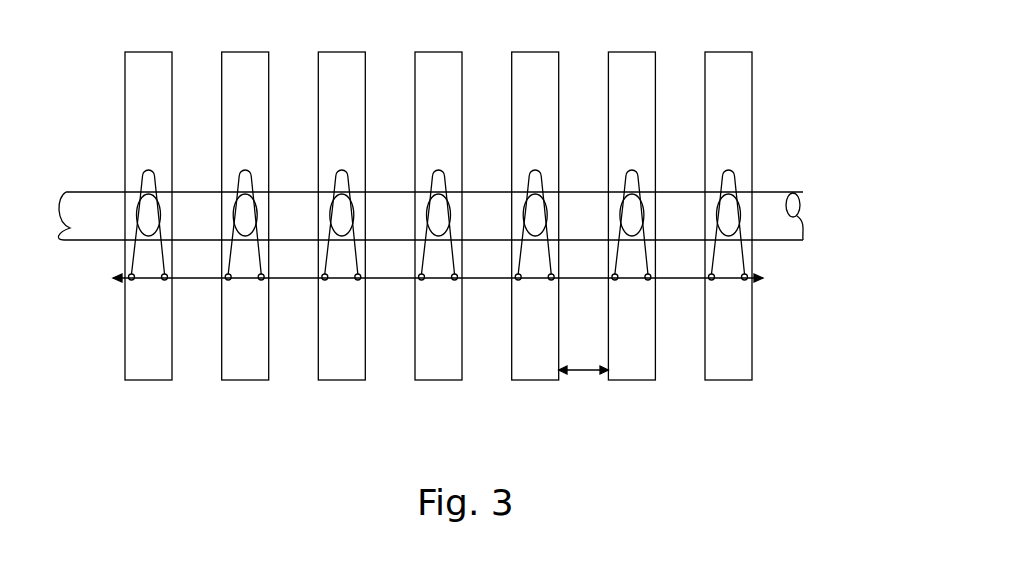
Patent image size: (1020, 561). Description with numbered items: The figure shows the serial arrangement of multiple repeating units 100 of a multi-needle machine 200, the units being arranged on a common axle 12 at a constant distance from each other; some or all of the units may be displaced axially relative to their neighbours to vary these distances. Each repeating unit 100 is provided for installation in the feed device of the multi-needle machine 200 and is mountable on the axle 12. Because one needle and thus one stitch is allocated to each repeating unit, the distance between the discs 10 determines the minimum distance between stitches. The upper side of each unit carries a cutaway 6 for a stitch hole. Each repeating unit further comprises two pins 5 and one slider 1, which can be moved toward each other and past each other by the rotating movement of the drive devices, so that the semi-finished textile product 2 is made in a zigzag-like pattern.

The multi-needle machine 200 is at (790, 122).
The repeating unit 100 is at (147, 382).
The axle 12 is at (763, 205).
The slider 1 is at (150, 166).
The cutaway 6 is at (138, 193).
The pin 5 is at (128, 275).
The semi-finished textile product 2 is at (745, 253).
The disc 10 is at (582, 372).